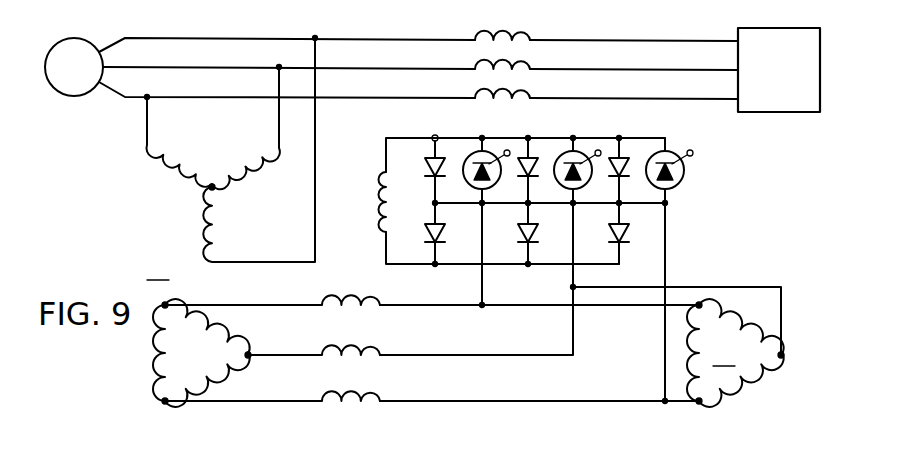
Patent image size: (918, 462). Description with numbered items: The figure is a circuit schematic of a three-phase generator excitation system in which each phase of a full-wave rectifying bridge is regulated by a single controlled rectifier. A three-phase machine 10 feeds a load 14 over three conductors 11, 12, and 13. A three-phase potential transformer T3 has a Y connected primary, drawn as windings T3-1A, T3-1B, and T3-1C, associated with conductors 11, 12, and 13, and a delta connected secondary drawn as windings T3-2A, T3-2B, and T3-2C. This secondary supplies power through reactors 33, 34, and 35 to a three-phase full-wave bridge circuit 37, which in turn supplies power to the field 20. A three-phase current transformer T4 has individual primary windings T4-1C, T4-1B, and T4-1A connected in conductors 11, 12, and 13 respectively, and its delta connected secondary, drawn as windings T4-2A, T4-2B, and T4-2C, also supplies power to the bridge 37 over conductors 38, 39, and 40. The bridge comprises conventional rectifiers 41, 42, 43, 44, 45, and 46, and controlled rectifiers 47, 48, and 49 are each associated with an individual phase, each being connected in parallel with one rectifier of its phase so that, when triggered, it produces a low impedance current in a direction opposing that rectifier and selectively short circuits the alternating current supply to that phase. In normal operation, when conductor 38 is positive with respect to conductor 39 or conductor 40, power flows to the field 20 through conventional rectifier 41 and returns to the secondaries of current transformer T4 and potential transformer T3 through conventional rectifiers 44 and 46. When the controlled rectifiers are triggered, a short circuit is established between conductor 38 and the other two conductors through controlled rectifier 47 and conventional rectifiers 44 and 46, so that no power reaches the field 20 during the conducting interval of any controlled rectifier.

The alternator / generator 10 is at (60, 44).
The conductor 11 is at (131, 39).
The conductor 12 is at (131, 68).
The conductor 13 is at (131, 97).
The load 14 is at (772, 113).
The field 20 is at (365, 221).
The reactor 33 is at (343, 301).
The reactor 34 is at (343, 351).
The reactor 35 is at (343, 397).
The three-phase full-wave bridge circuit 37 is at (460, 293).
The conductor 38 is at (509, 305).
The conductor 39 is at (509, 355).
The conductor 40 is at (509, 401).
The conventional rectifier 41 is at (425, 234).
The diode 42 is at (428, 167).
The diode 43 is at (519, 234).
The conventional rectifier 44 is at (521, 167).
The diode 45 is at (609, 234).
The conventional rectifier 46 is at (614, 171).
The controlled rectifier 47 is at (474, 148).
The controlled rectifier 48 is at (567, 148).
The controlled rectifier 49 is at (659, 148).
The three-phase potential transformer T3 is at (223, 159).
The transformer T3 primary winding A T3-1A is at (189, 169).
The transformer T3 primary winding B T3-1B is at (255, 172).
The transformer T3 primary winding C T3-1C is at (208, 225).
The transformer T3 secondary winding A T3-2A is at (216, 326).
The transformer T3 secondary winding B T3-2B is at (218, 378).
The transformer T3 secondary winding C T3-2C is at (153, 350).
The three-phase current transformer T4 is at (718, 353).
The primary winding T4-1A is at (512, 91).
The primary winding T4-1B is at (512, 61).
The primary winding T4-1C is at (512, 30).
The transformer T4 secondary winding A T4-2A is at (754, 330).
The transformer T4 secondary winding B T4-2B is at (741, 391).
The secondary winding T4-2C is at (689, 349).